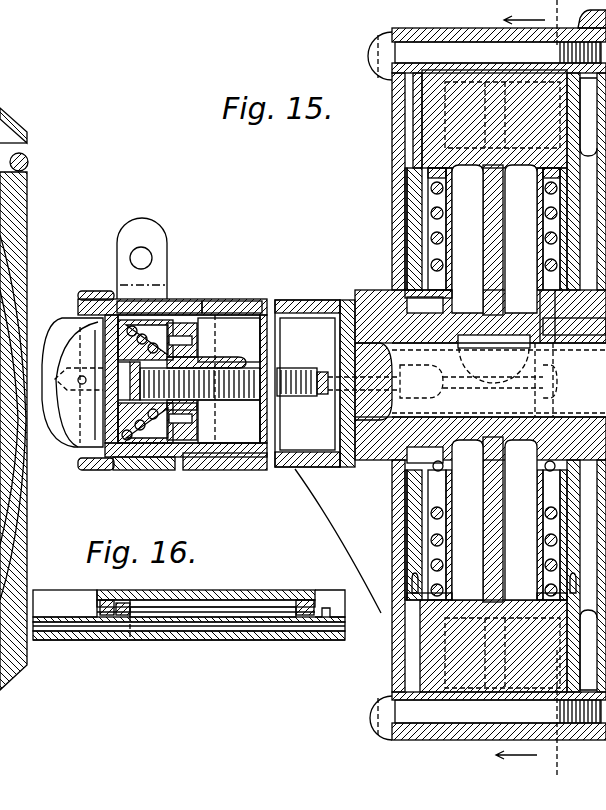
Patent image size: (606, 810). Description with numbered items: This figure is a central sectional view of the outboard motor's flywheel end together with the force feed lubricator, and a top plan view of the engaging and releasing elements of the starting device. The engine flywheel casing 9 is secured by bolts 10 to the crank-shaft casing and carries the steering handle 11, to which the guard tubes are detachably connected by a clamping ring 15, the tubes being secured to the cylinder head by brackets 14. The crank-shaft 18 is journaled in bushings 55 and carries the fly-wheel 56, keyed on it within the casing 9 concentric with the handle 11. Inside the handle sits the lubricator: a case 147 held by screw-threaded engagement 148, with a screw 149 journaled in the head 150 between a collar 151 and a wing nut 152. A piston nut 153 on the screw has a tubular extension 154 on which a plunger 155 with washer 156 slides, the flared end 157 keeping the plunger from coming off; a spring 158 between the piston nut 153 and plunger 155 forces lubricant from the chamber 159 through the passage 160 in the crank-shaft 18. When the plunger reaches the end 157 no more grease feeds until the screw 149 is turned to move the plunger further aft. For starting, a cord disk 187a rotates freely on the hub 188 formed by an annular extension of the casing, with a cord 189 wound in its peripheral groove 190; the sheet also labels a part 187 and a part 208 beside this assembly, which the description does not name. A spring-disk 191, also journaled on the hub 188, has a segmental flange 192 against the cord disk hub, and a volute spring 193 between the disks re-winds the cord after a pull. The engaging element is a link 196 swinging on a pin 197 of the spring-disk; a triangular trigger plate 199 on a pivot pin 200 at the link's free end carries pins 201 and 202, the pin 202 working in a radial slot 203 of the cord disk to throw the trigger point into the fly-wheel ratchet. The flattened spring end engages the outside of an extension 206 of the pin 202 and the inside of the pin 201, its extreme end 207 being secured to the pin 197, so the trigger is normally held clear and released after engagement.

In FIG. 15, the engine flywheel casing 9 is at (318, 292).
In FIG. 15, the bolts 10 is at (449, 52).
In FIG. 15, the steering handle 11 is at (258, 298).
In FIG. 15, the brackets 14 is at (530, 394).
In FIG. 15, the clamping ring 15 is at (156, 243).
In FIG. 15, the crank-shaft 18 is at (567, 358).
In FIG. 15, the bushings 55 is at (580, 335).
In FIG. 15, the fly-wheel 56 is at (518, 699).
In FIG. 15, the case 147 is at (140, 471).
In FIG. 15, the screw-threaded engagement 148 is at (185, 471).
In FIG. 15, the screw 149 is at (252, 390).
In FIG. 15, the head 150 is at (93, 474).
In FIG. 15, the collar 151 is at (200, 348).
In FIG. 15, the wing nut 152 is at (64, 428).
In FIG. 15, the piston nut 153 is at (256, 275).
In FIG. 15, the tubular extension 154 is at (228, 360).
In FIG. 15, the plunger 155 is at (197, 438).
In FIG. 15, the washer 156 is at (198, 428).
In FIG. 15, the enlarged end 157 is at (246, 362).
In FIG. 15, the spring 158 is at (174, 297).
In FIG. 15, the chamber 159 is at (302, 428).
In FIG. 15, the passage 160 is at (430, 397).
In FIG. 16, the sleeve 187 is at (260, 637).
In FIG. 15, the cord disk 187a is at (410, 237).
In FIG. 15, the hub 188 is at (440, 293).
In FIG. 15, the cord 189 is at (406, 183).
In FIG. 15, the peripheral groove 190 is at (420, 186).
In FIG. 16, the peripheral groove 190 is at (230, 625).
In FIG. 15, the spring-disk 191 is at (532, 220).
In FIG. 16, the spring-disk 191 is at (247, 592).
In FIG. 15, the segmental flange 192 is at (533, 573).
In FIG. 15, the volute spring 193 is at (446, 185).
In FIG. 16, the volute spring 193 is at (272, 602).
In FIG. 16, the link 196 is at (272, 614).
In FIG. 15, the pin 197 is at (4, 224).
In FIG. 16, the pin 197 is at (305, 612).
In FIG. 16, the triangular plate 199 is at (206, 657).
In FIG. 16, the pivot pin 200 is at (164, 614).
In FIG. 16, the pin 201 is at (187, 680).
In FIG. 16, the pin 202 is at (128, 610).
In FIG. 16, the radial slot 203 is at (132, 625).
In FIG. 16, the extension 206 is at (125, 602).
In FIG. 16, the extreme end 207 is at (306, 594).
In FIG. 15, the retainer 208 is at (437, 170).